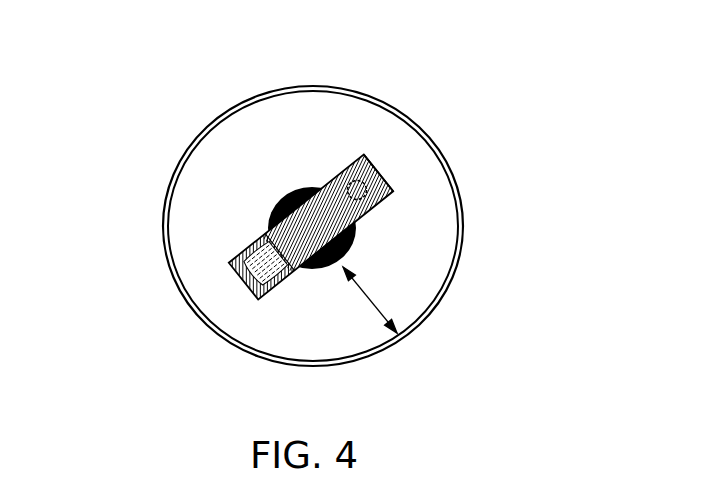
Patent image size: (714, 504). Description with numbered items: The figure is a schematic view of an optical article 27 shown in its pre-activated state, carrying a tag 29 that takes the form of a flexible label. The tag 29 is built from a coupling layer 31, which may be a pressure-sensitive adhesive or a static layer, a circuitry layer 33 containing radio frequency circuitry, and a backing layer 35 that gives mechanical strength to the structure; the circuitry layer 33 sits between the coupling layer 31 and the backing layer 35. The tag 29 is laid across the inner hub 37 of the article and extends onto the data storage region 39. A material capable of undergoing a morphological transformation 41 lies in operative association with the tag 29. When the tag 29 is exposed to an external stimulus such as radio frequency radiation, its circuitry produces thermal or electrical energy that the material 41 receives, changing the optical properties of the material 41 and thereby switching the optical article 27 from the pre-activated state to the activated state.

The optical article 27 is at (366, 66).
The tag 29 is at (380, 160).
The coupling layer 31 is at (229, 262).
The circuitry layer 33 is at (267, 233).
The backing layer 35 is at (393, 194).
The inner hub 37 is at (294, 201).
The data storage region 39 is at (372, 303).
The material capable of undergoing a morphological transformation 41 is at (348, 183).